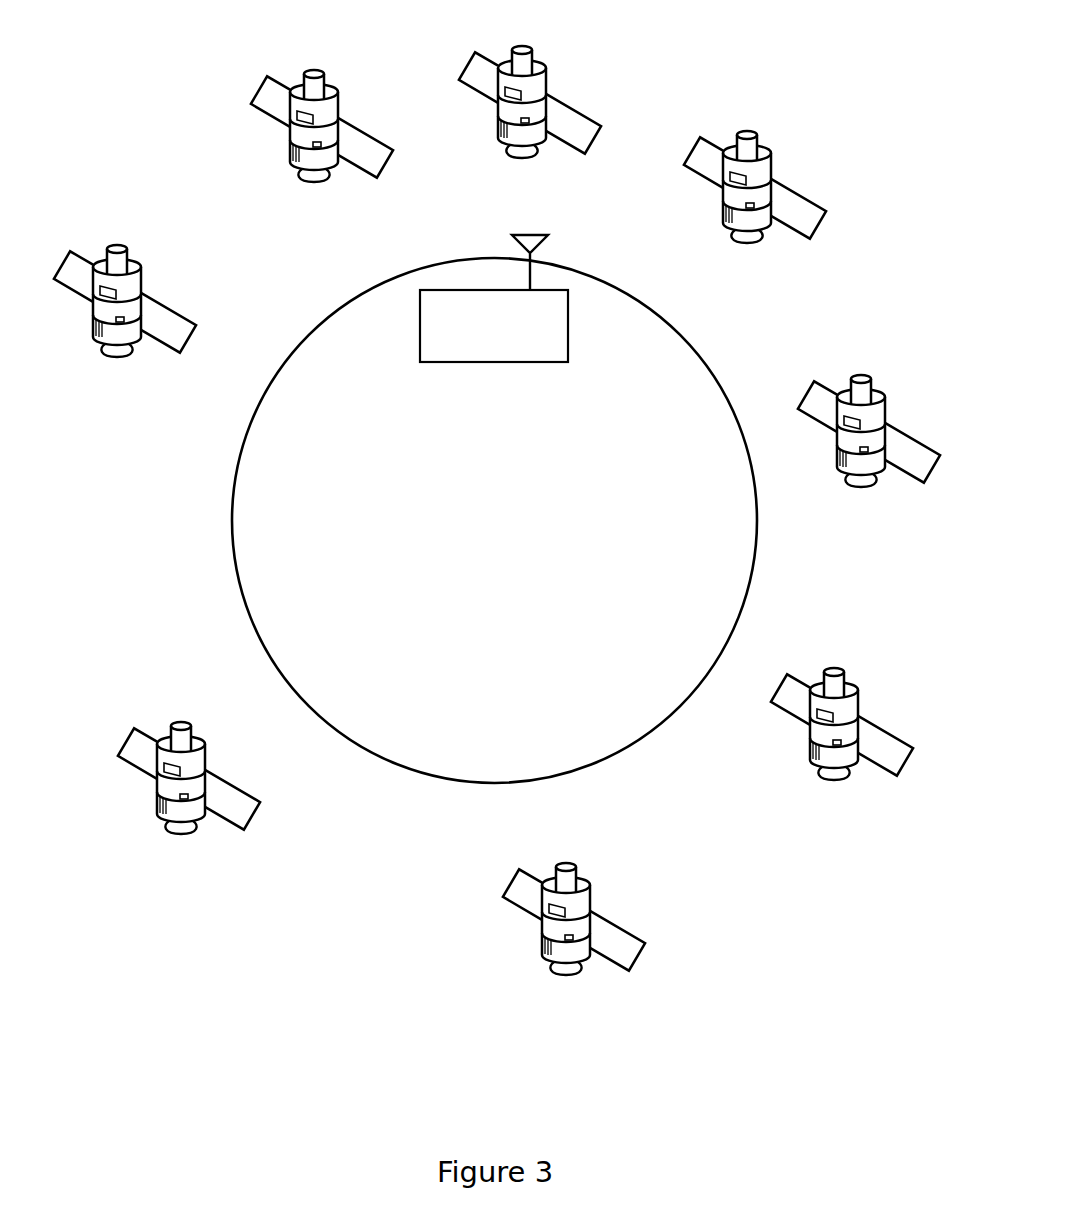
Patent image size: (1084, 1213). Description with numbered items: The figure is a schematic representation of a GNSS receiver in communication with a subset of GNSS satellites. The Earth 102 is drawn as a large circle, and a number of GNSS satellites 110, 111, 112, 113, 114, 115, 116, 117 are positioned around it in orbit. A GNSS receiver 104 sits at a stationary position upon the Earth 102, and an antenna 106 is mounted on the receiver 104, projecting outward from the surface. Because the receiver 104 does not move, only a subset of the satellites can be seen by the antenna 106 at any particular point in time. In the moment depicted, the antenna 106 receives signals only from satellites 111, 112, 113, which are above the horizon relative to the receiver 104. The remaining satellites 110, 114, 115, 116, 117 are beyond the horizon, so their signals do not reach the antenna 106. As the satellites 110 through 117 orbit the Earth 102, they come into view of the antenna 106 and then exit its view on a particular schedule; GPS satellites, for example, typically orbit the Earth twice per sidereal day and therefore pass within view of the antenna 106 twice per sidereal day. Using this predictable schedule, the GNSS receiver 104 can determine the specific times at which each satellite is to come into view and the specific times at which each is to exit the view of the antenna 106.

The Earth 102 is at (435, 777).
The GNSS receiver 104 is at (502, 362).
The antenna 106 is at (547, 237).
The GNSS satellite 110 is at (116, 244).
The GNSS satellite 111 is at (313, 69).
The GNSS satellite 112 is at (522, 46).
The GNSS satellite 113 is at (745, 131).
The GNSS satellite 114 is at (861, 375).
The GNSS satellite 115 is at (834, 668).
The GNSS satellite 116 is at (565, 863).
The GNSS satellite 117 is at (181, 722).